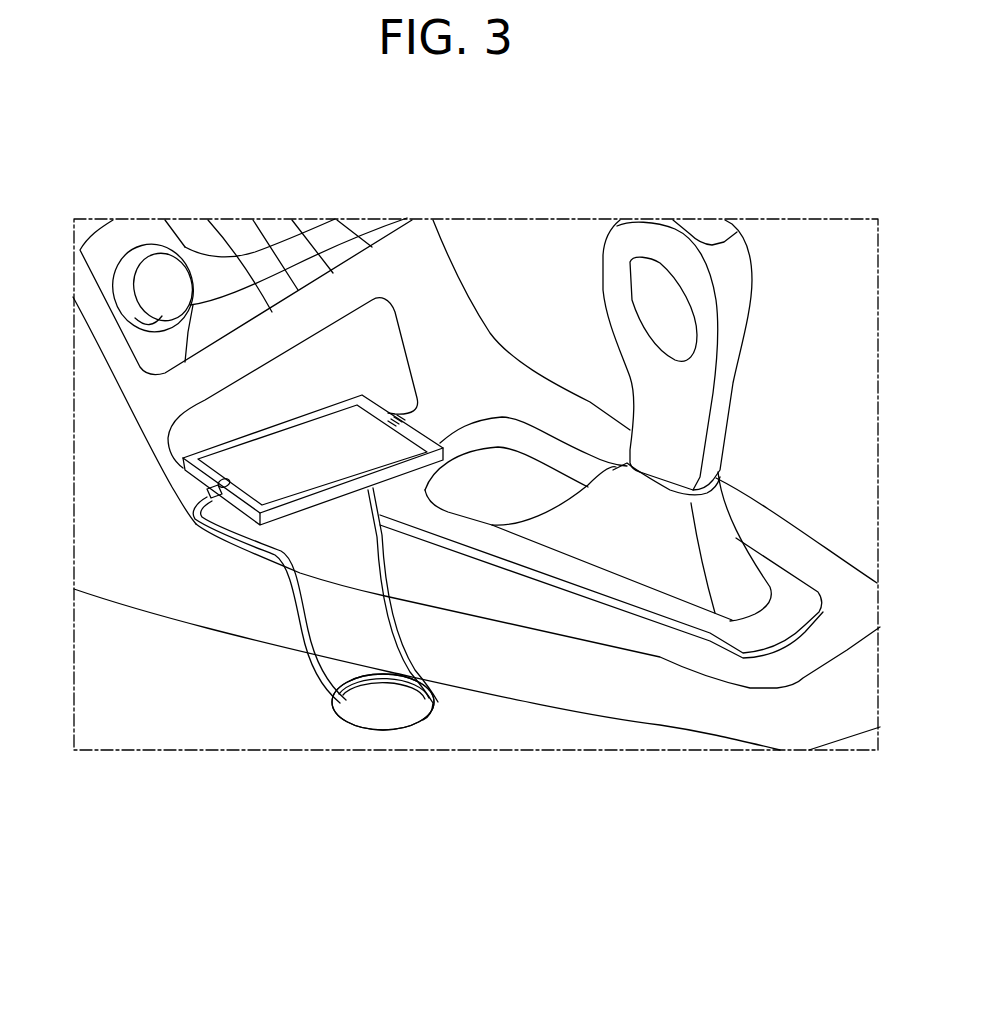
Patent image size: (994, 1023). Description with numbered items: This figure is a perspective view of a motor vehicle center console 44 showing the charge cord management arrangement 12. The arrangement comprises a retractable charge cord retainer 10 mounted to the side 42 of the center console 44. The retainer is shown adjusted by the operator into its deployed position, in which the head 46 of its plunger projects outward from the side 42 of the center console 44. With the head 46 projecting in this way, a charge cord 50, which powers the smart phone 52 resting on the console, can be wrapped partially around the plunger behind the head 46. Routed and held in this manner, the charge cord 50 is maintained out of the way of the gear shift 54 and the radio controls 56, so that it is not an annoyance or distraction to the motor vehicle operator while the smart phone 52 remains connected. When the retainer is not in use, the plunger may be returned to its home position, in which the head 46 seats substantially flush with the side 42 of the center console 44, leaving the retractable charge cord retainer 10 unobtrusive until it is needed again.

The retractable charge cord retainer 10 is at (350, 732).
The charge cord management arrangement 12 is at (175, 654).
The side 42 is at (515, 722).
The center console 44 is at (788, 547).
The head 46 is at (377, 718).
The charge cord 50 is at (305, 620).
The smart phone 52 is at (352, 430).
The gear shift 54 is at (730, 383).
The radio controls 56 is at (168, 297).